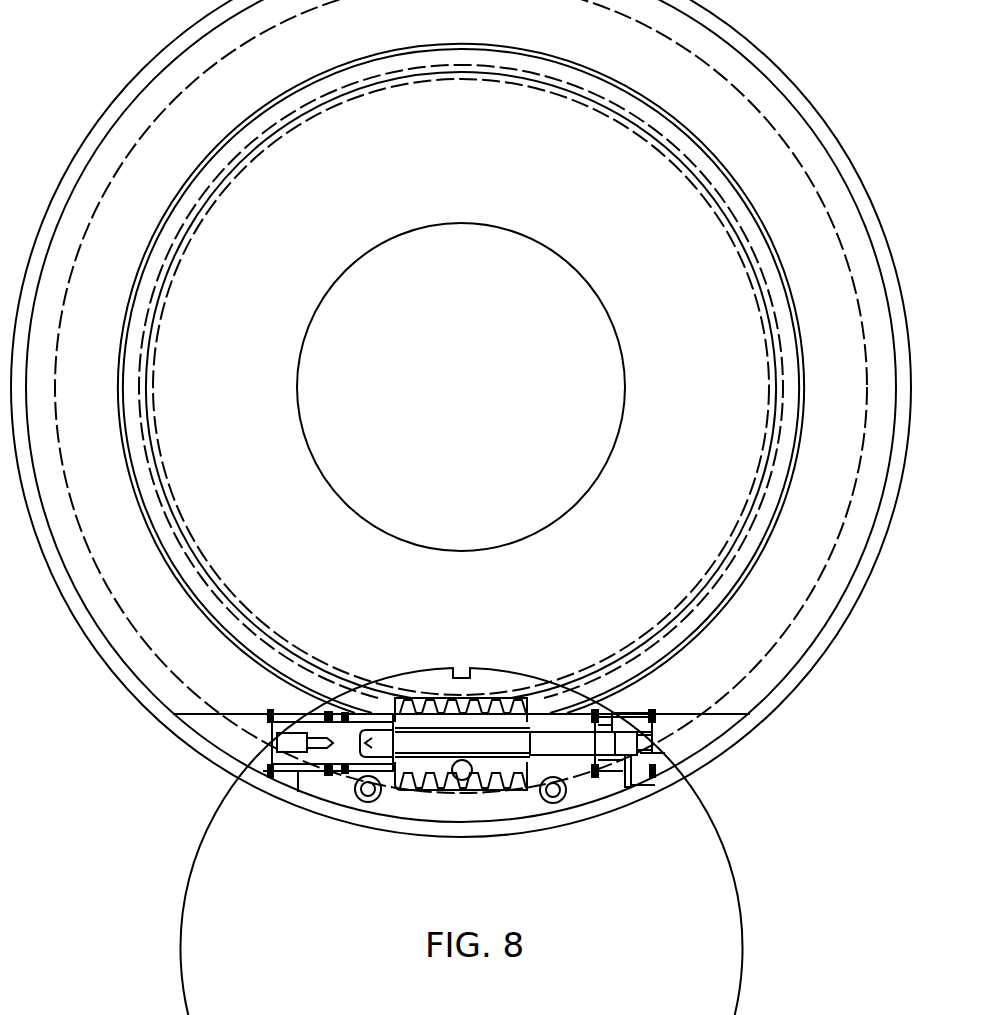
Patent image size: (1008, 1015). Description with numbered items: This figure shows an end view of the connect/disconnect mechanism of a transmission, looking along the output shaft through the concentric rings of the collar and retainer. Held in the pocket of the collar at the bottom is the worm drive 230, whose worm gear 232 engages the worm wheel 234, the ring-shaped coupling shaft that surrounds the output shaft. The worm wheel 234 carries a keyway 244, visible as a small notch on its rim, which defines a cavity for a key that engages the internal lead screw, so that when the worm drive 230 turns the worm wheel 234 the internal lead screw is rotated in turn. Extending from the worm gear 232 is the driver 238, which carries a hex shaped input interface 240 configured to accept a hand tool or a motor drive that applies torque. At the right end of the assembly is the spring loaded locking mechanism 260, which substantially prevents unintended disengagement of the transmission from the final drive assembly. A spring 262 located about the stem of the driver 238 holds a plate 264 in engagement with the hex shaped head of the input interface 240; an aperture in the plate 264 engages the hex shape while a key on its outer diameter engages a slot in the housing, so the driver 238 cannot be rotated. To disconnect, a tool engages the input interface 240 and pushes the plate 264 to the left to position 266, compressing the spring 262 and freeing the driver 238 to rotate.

The worm drive 230 is at (497, 788).
The worm gear 232 is at (407, 769).
The worm wheel 234 is at (229, 576).
The driver 238 is at (637, 763).
The input interface 240 is at (657, 742).
The keyway 244 is at (463, 668).
The spring loaded locking mechanism 260 is at (656, 700).
The spring 262 is at (628, 725).
The plate 264 is at (657, 727).
The position 266 is at (634, 762).